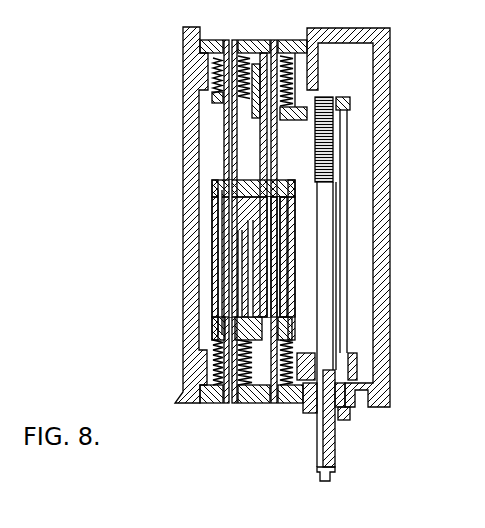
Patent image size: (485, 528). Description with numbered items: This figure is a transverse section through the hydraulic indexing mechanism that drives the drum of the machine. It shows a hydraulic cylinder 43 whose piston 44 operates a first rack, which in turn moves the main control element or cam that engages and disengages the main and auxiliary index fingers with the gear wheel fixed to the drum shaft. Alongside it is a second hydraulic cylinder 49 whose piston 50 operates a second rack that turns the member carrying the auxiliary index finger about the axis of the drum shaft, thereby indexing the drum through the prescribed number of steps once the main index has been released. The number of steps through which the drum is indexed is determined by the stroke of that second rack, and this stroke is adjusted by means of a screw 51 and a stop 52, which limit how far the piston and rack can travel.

The hydraulic cylinder 43 is at (263, 217).
The piston 44 is at (178, 260).
The hydraulic cylinder 49 is at (291, 304).
The piston 50 is at (294, 284).
The screw 51 is at (327, 253).
The stop 52 is at (298, 121).